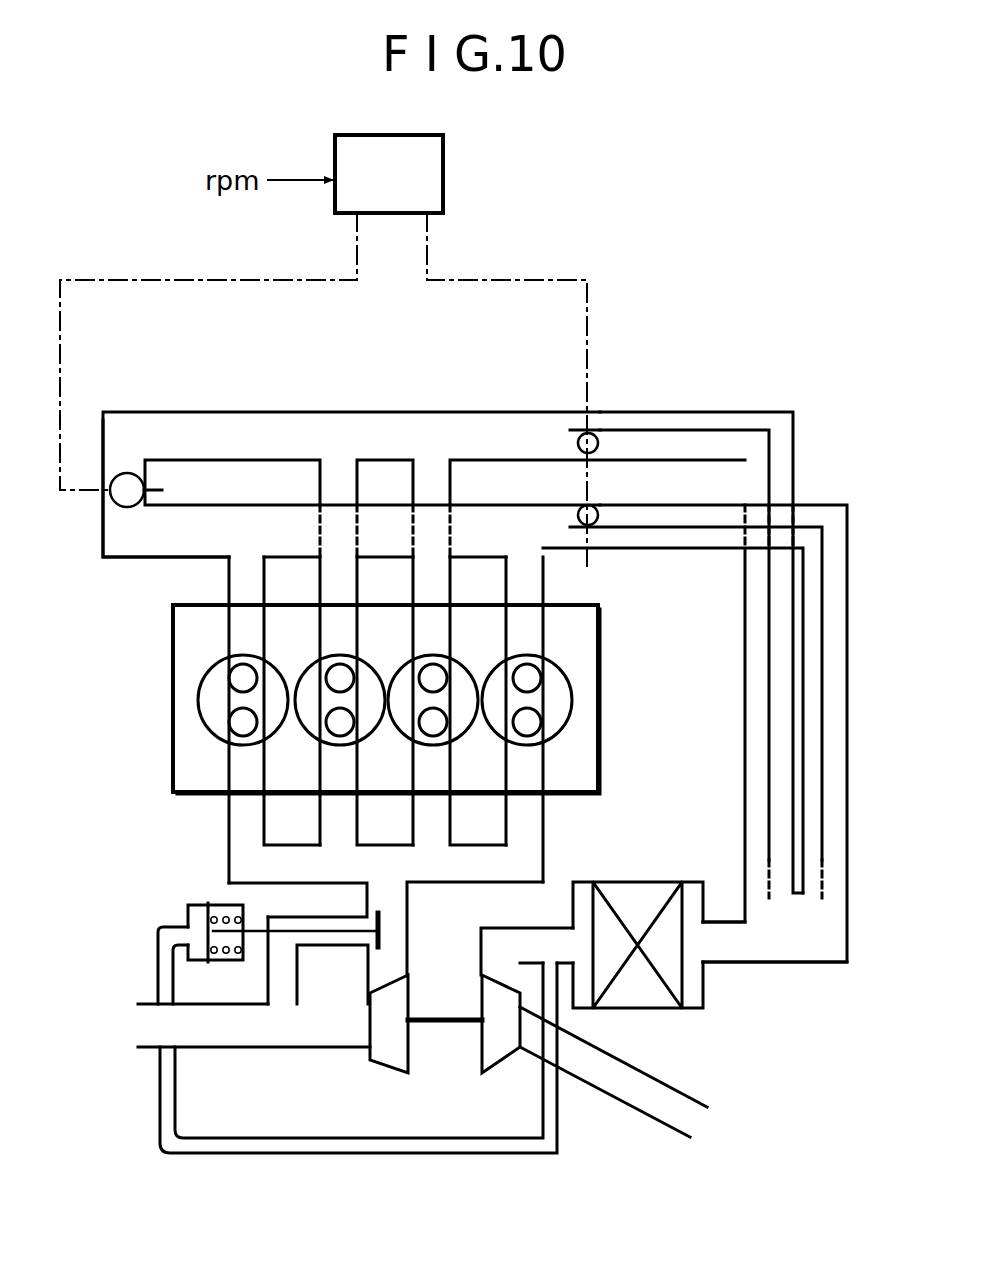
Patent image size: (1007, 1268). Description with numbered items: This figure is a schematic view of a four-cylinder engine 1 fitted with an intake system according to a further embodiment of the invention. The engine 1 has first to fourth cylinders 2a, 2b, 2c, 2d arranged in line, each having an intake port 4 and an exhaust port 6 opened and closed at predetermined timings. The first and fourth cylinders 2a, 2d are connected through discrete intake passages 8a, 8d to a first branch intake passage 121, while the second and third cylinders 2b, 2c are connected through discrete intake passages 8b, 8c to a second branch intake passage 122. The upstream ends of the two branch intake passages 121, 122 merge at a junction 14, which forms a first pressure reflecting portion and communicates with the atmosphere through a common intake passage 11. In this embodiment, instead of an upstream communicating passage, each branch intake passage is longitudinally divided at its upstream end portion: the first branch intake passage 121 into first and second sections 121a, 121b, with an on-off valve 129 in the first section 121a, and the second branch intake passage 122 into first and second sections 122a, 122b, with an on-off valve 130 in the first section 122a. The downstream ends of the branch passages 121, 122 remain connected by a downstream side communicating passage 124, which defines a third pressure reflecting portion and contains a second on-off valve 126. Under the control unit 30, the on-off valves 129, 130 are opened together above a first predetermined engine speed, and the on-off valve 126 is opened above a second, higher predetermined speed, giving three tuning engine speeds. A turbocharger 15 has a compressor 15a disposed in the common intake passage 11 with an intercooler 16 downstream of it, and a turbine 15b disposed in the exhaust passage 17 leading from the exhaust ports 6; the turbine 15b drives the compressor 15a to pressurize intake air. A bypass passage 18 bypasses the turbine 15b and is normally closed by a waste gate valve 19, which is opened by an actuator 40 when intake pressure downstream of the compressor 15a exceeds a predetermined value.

The control unit 30 is at (445, 160).
The second branch intake passage 122 is at (392, 416).
The first section of second branch intake passage 122a is at (725, 432).
The second section of second branch intake passage 122b is at (676, 415).
The on-off valve 130 is at (580, 440).
The on-off valve 129 is at (578, 512).
The first branch intake passage 121 is at (228, 532).
The first section of first branch intake passage 121a is at (695, 516).
The second section of first branch intake passage 121b is at (700, 540).
The downstream side communicating passage 124 is at (120, 516).
The second on-off valve 126 is at (127, 472).
The discrete intake passage 8a is at (230, 582).
The discrete intake passage 8b is at (320, 478).
The discrete intake passage 8c is at (450, 482).
The discrete intake passage 8d is at (545, 582).
The four-cylinder engine 1 is at (163, 735).
The first cylinder 2a is at (200, 690).
The second cylinder 2b is at (330, 725).
The third cylinder 2c is at (425, 725).
The fourth cylinder 2d is at (575, 687).
The intake port 4 is at (322, 680).
The exhaust port 6 is at (238, 722).
The exhaust passage 17 is at (229, 840).
The bypass passage 18 is at (283, 950).
The actuator 40 is at (180, 902).
The waste gate valve 19 is at (380, 920).
The turbocharger 15 is at (462, 1095).
The compressor 15a is at (505, 1048).
The turbine 15b is at (392, 1055).
The common intake passage 11 is at (640, 1108).
The intercooler 16 is at (650, 903).
The junction 14 is at (805, 940).